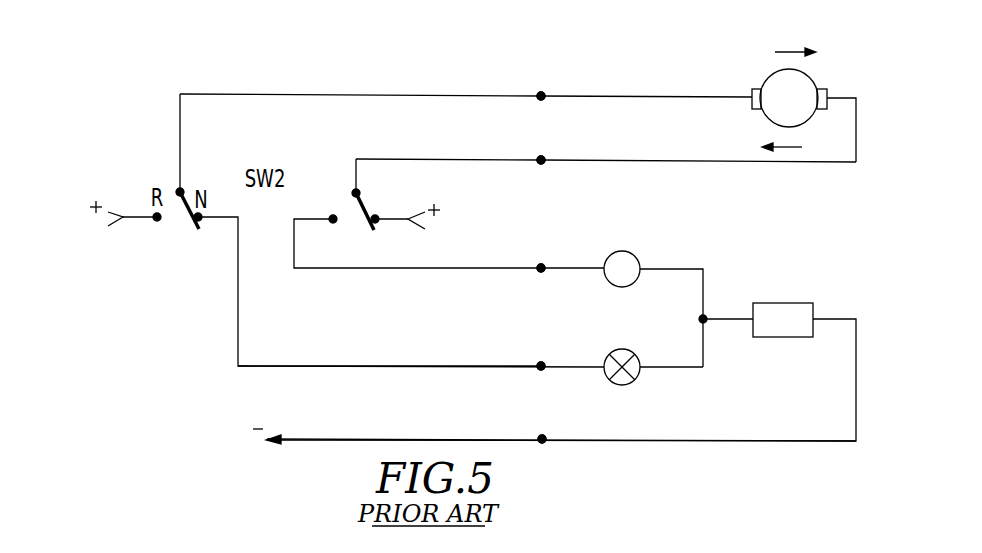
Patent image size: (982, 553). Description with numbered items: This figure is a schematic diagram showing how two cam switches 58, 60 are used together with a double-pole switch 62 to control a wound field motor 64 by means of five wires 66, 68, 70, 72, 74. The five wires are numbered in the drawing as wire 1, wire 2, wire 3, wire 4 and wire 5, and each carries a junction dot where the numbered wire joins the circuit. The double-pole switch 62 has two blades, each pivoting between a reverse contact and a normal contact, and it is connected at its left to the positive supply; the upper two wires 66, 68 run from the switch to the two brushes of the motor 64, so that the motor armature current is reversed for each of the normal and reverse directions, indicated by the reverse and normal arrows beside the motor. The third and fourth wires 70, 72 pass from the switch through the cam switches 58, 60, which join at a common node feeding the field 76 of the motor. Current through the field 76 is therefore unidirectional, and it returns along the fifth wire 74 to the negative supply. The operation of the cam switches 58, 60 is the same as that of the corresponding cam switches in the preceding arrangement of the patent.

The cam switch 58 is at (623, 287).
The cam switch 60 is at (622, 385).
The double-pole switch 62 is at (455, 198).
The wound field motor 64 is at (810, 80).
The wire 66 is at (541, 96).
The wire 68 is at (541, 160).
The wire 70 is at (541, 268).
The wire 72 is at (541, 366).
The wire 74 is at (542, 439).
The field 76 is at (805, 303).
The terminal 1 is at (547, 85).
The terminal 2 is at (547, 150).
The terminal 3 is at (547, 257).
The terminal 4 is at (547, 356).
The terminal 5 is at (548, 429).